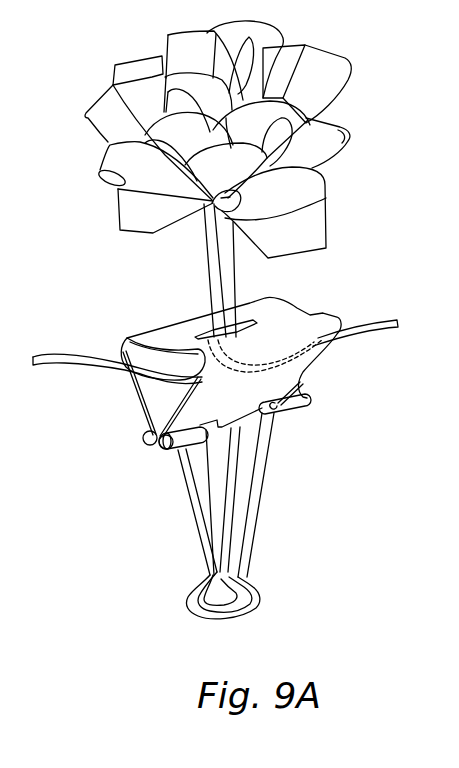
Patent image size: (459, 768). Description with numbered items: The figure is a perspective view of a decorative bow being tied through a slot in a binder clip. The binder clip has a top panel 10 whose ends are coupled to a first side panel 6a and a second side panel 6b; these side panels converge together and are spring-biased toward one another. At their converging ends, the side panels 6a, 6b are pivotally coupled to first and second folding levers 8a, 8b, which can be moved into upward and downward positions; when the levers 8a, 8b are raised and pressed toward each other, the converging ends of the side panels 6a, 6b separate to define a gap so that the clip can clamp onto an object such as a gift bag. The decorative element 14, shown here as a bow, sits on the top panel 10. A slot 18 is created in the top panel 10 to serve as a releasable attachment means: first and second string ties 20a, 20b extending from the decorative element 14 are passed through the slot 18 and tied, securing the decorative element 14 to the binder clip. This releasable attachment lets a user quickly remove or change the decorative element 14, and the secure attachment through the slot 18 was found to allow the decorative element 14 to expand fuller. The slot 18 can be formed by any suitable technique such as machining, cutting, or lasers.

The decorative element 14 is at (333, 130).
The top panel 10 is at (163, 327).
The slot 18 is at (283, 317).
The first side panel 6a is at (300, 380).
The second side panel 6b is at (137, 393).
The first folding lever 8a is at (257, 497).
The second folding lever 8b is at (187, 510).
The first string tie 20a is at (367, 337).
The second string tie 20b is at (57, 350).